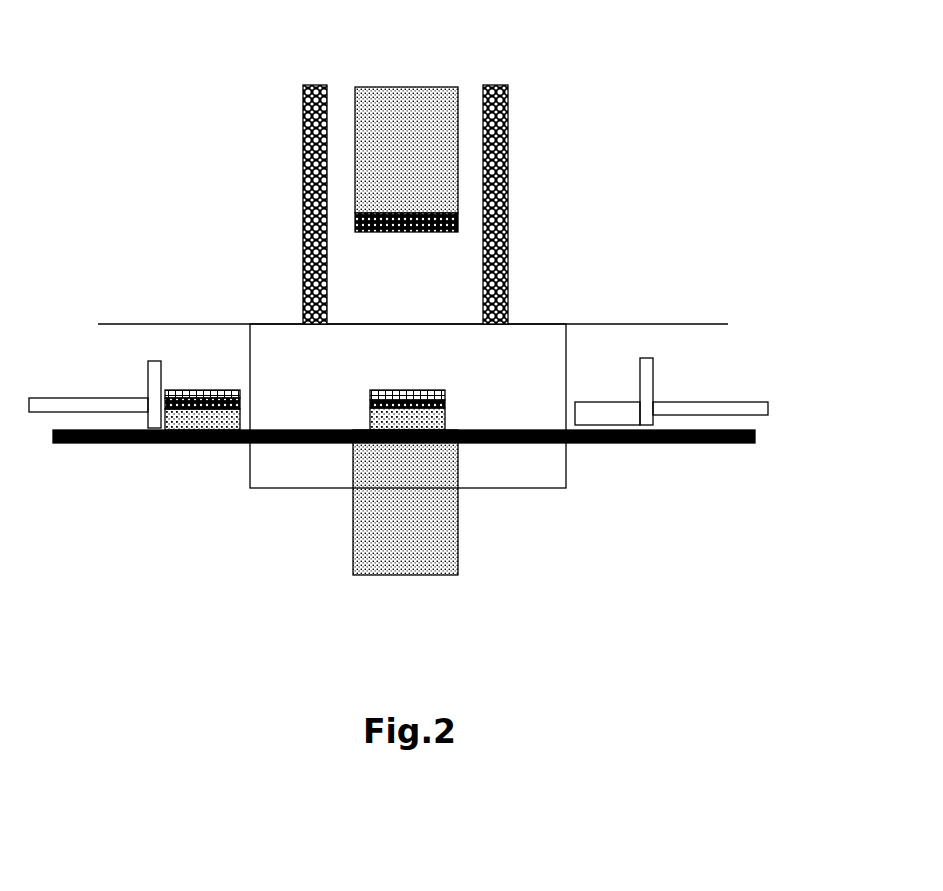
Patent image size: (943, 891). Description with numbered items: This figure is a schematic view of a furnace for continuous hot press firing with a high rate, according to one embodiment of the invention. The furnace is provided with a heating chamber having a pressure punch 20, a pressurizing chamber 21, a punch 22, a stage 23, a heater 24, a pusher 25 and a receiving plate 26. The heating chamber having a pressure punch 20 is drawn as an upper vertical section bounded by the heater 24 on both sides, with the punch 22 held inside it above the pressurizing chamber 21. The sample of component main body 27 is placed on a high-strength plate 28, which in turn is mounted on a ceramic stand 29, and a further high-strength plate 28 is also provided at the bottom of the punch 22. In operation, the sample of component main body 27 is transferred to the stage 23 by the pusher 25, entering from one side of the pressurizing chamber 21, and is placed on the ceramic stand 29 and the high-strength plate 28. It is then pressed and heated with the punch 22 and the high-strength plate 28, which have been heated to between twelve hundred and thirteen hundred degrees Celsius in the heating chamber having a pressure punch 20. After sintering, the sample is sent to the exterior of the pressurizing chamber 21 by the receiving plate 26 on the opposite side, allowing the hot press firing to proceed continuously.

The heating chamber having a pressure punch 20 is at (448, 295).
The pressurizing chamber 21 is at (307, 368).
The punch 22 is at (400, 118).
The stage 23 is at (440, 510).
The heater 24 is at (303, 148).
The pusher 25 is at (152, 390).
The receiving plate 26 is at (650, 398).
The sample of component main body 27 is at (400, 391).
The high-strength plate 28 is at (445, 210).
The ceramic stand 29 is at (185, 420).